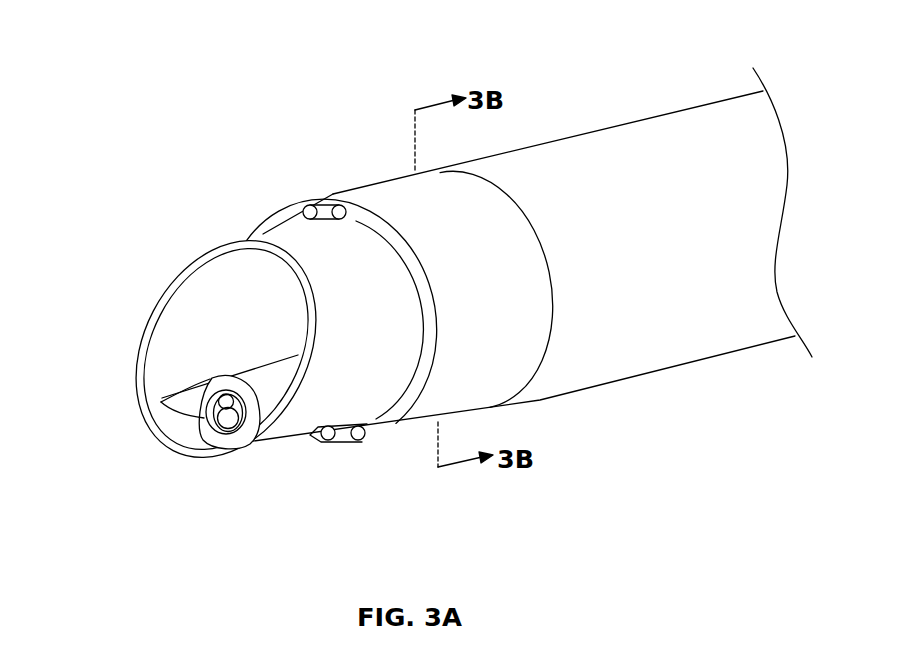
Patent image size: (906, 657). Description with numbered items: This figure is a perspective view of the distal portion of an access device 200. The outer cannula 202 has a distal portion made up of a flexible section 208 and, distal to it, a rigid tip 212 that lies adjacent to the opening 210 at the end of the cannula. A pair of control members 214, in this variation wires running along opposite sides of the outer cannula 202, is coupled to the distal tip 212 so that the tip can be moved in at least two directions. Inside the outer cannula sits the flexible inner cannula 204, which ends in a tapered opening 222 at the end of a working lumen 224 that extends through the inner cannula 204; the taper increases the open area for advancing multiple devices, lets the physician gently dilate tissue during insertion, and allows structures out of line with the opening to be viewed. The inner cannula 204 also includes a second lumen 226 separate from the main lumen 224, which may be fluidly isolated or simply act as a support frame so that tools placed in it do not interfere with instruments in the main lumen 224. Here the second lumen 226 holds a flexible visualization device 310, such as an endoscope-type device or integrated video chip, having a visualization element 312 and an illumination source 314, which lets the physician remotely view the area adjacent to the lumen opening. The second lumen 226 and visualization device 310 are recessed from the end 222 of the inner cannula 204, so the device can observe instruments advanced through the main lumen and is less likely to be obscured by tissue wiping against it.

The access device 200 is at (146, 46).
The outer cannula 202 is at (552, 134).
The flexible inner cannula 204 is at (201, 258).
The flexible section 208 is at (702, 330).
The opening 210 is at (387, 415).
The rigid tip 212 is at (517, 373).
The control members 214 is at (304, 210).
The tapered opening 222 is at (133, 384).
The working lumen 224 is at (172, 332).
The second lumen 226 is at (243, 377).
The visualization device 310 is at (247, 412).
The visualization element 312 is at (202, 430).
The illumination source 314 is at (198, 420).